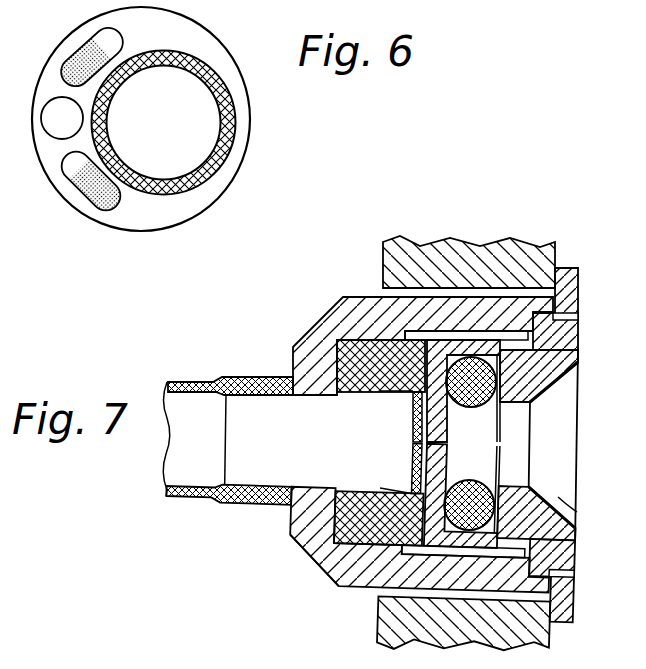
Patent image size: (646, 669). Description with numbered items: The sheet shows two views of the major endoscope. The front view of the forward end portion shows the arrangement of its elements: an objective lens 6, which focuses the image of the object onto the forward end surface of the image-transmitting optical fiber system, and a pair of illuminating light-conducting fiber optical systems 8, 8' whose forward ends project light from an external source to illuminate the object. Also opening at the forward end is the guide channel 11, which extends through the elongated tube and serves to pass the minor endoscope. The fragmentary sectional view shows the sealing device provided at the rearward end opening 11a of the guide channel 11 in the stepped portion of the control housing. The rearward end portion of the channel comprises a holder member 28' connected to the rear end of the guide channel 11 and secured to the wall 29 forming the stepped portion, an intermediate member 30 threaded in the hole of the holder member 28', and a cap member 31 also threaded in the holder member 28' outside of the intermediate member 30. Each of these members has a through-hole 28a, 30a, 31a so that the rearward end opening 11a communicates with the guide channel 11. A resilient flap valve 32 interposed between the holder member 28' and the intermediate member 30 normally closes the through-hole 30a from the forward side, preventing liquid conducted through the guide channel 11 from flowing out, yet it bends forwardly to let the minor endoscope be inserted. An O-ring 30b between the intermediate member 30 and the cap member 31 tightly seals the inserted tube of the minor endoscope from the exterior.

In FIG. 6, the objective lens 6 is at (55, 116).
In FIG. 6, the illuminating light-conducting fiber optical system 8 is at (81, 50).
In FIG. 6, the illuminating light-conducting fiber optical system 8' is at (86, 197).
In FIG. 6, the guide channel 11 is at (221, 158).
In FIG. 7, the guide channel 11 is at (188, 382).
In FIG. 7, the rearward end opening 11a is at (577, 512).
In FIG. 7, the holder member 28' is at (414, 439).
In FIG. 7, the through-hole 28a is at (247, 396).
In FIG. 7, the wall 29 is at (499, 252).
In FIG. 7, the intermediate member 30 is at (550, 326).
In FIG. 7, the through-hole 30a is at (432, 400).
In FIG. 7, the O-ring 30b is at (476, 525).
In FIG. 7, the cap member 31 is at (578, 353).
In FIG. 7, the through-hole 31a is at (532, 404).
In FIG. 7, the resilient flap valve 32 is at (317, 558).